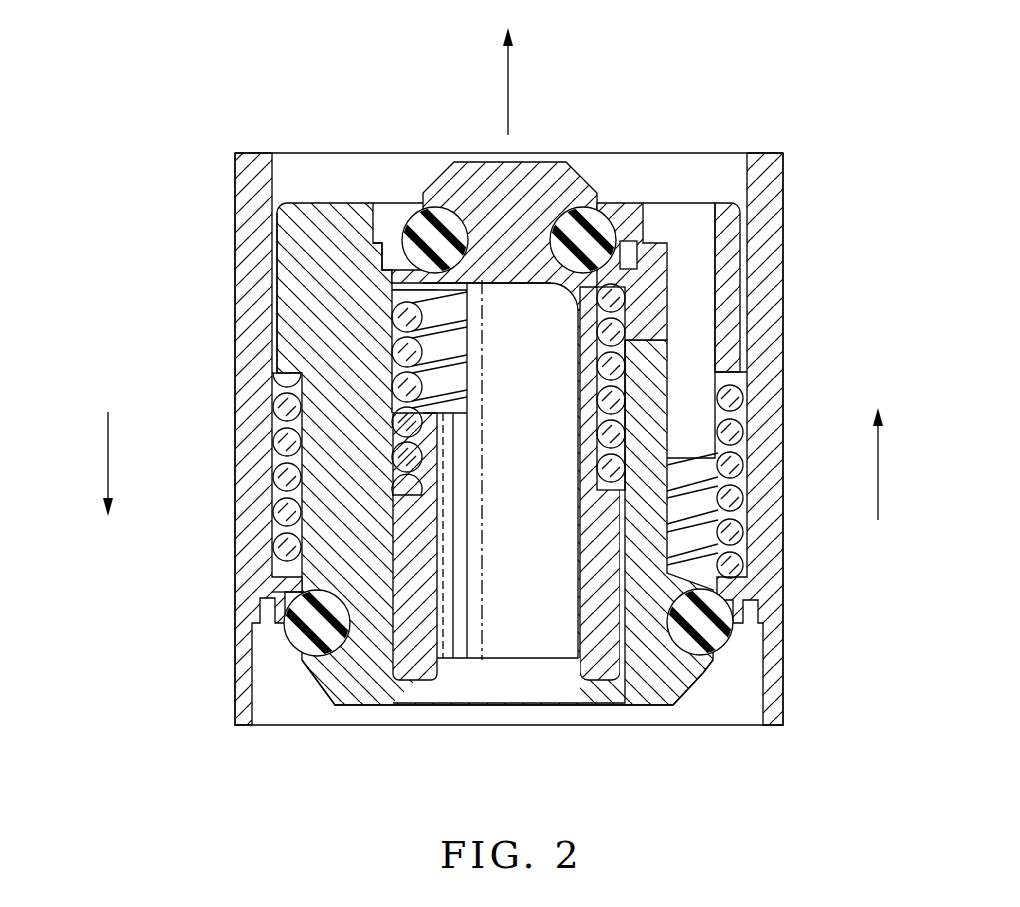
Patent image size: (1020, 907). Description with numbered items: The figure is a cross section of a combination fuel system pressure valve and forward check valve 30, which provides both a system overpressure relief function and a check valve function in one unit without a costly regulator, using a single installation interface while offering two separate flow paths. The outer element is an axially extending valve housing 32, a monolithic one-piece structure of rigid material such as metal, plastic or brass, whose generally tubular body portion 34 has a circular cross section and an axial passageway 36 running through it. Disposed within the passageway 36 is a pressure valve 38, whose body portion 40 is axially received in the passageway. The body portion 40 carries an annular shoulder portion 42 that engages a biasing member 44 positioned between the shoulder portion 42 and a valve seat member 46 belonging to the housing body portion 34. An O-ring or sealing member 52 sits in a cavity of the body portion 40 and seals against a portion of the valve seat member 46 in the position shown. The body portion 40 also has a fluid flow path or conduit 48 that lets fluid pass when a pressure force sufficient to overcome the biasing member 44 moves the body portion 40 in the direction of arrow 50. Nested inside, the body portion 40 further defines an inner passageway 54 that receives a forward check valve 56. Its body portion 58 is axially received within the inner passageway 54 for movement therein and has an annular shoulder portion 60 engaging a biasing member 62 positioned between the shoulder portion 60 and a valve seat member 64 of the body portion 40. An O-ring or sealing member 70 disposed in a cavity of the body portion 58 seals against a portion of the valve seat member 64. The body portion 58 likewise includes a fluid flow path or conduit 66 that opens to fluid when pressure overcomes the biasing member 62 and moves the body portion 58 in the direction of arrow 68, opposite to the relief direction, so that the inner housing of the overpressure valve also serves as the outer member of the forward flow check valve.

The combination fuel system pressure valve and forward check valve 30 is at (838, 100).
The valve housing 32 is at (790, 237).
The body portion 34 is at (773, 527).
The passageway 36 is at (742, 155).
The pressure valve 38 is at (308, 200).
The body portion 40 is at (313, 283).
The shoulder portion 42 is at (275, 385).
The biasing member 44 is at (273, 412).
The valve seat member 46 is at (280, 590).
The fluid flow path or conduit 48 is at (708, 336).
The arrow 50 is at (107, 460).
The O-ring or sealing member 52 is at (698, 652).
The inner passageway 54 is at (627, 680).
The forward check valve 56 is at (408, 676).
The body portion 58 is at (415, 615).
The shoulder portion 60 is at (392, 483).
The biasing member 62 is at (395, 347).
The valve seat member 64 is at (395, 268).
The fluid flow path or conduit 66 is at (580, 635).
The arrow 68 is at (878, 463).
The O-ring or sealing member 70 is at (595, 220).